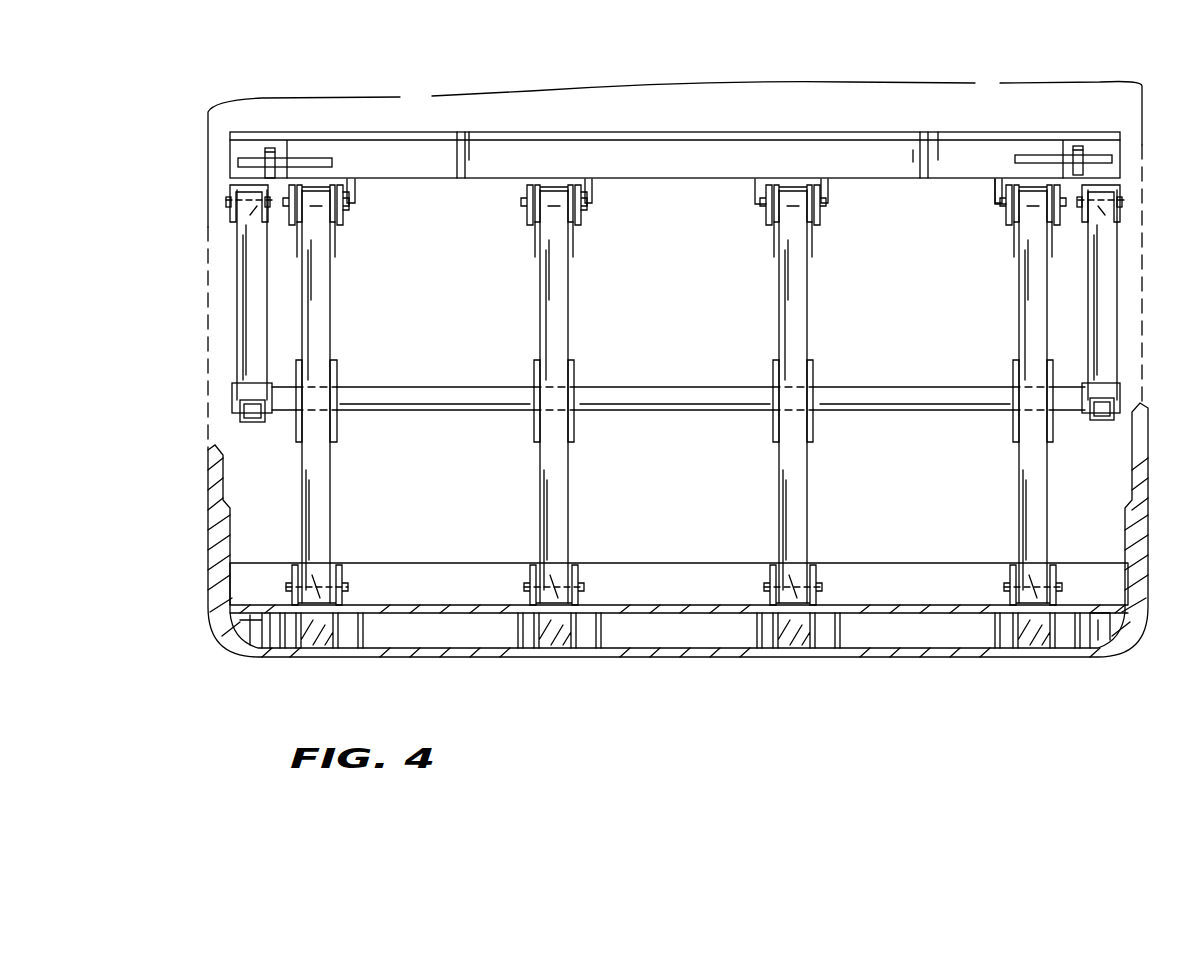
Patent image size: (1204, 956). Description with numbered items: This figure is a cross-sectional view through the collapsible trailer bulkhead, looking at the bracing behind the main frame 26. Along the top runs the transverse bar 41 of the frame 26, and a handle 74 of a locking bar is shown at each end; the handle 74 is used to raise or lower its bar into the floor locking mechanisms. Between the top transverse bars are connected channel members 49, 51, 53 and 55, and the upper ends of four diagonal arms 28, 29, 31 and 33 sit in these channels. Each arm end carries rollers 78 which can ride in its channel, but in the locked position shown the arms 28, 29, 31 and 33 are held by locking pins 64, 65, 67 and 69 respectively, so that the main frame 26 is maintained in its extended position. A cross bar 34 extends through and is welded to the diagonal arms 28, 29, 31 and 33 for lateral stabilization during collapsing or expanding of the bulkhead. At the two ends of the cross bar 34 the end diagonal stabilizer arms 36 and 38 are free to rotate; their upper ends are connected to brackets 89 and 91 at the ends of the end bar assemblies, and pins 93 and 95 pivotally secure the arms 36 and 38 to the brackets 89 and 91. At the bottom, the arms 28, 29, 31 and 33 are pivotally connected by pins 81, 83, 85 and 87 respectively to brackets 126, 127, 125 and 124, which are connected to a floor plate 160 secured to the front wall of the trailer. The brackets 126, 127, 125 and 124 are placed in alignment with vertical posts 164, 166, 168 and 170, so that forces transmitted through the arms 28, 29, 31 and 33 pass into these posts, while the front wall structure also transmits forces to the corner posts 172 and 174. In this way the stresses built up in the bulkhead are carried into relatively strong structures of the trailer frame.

The frame 26 is at (797, 108).
The transverse bar 41 is at (880, 168).
The handle 74 is at (293, 160).
The rollers 78 is at (352, 182).
The end diagonal stabilizer arm 38 is at (245, 290).
The end diagonal stabilizer arm 36 is at (1100, 290).
The diagonal arm 33 is at (330, 308).
The diagonal arm 31 is at (568, 308).
The diagonal arm 29 is at (808, 308).
The diagonal arm 28 is at (1020, 296).
The cross bar 34 is at (692, 392).
The bracket 91 is at (232, 192).
The pin 95 is at (248, 217).
The bracket 89 is at (1118, 186).
The pin 93 is at (1105, 218).
The channel member 55 is at (338, 222).
The locking pin 69 is at (350, 204).
The channel member 53 is at (588, 205).
The locking pin 67 is at (583, 222).
The channel member 51 is at (818, 222).
The locking pin 65 is at (762, 214).
The channel member 49 is at (1010, 222).
The locking pin 64 is at (1000, 204).
The floor plate 160 is at (908, 578).
The bracket 124 is at (342, 572).
The bracket 125 is at (578, 572).
The bracket 127 is at (818, 572).
The bracket 126 is at (1056, 572).
The pin 87 is at (305, 552).
The pin 85 is at (542, 552).
The pin 83 is at (782, 552).
The pin 81 is at (1020, 552).
The corner post 172 is at (258, 630).
The vertical post 170 is at (315, 645).
The vertical post 168 is at (560, 645).
The vertical post 166 is at (790, 645).
The vertical post 164 is at (1016, 645).
The corner post 174 is at (1092, 635).